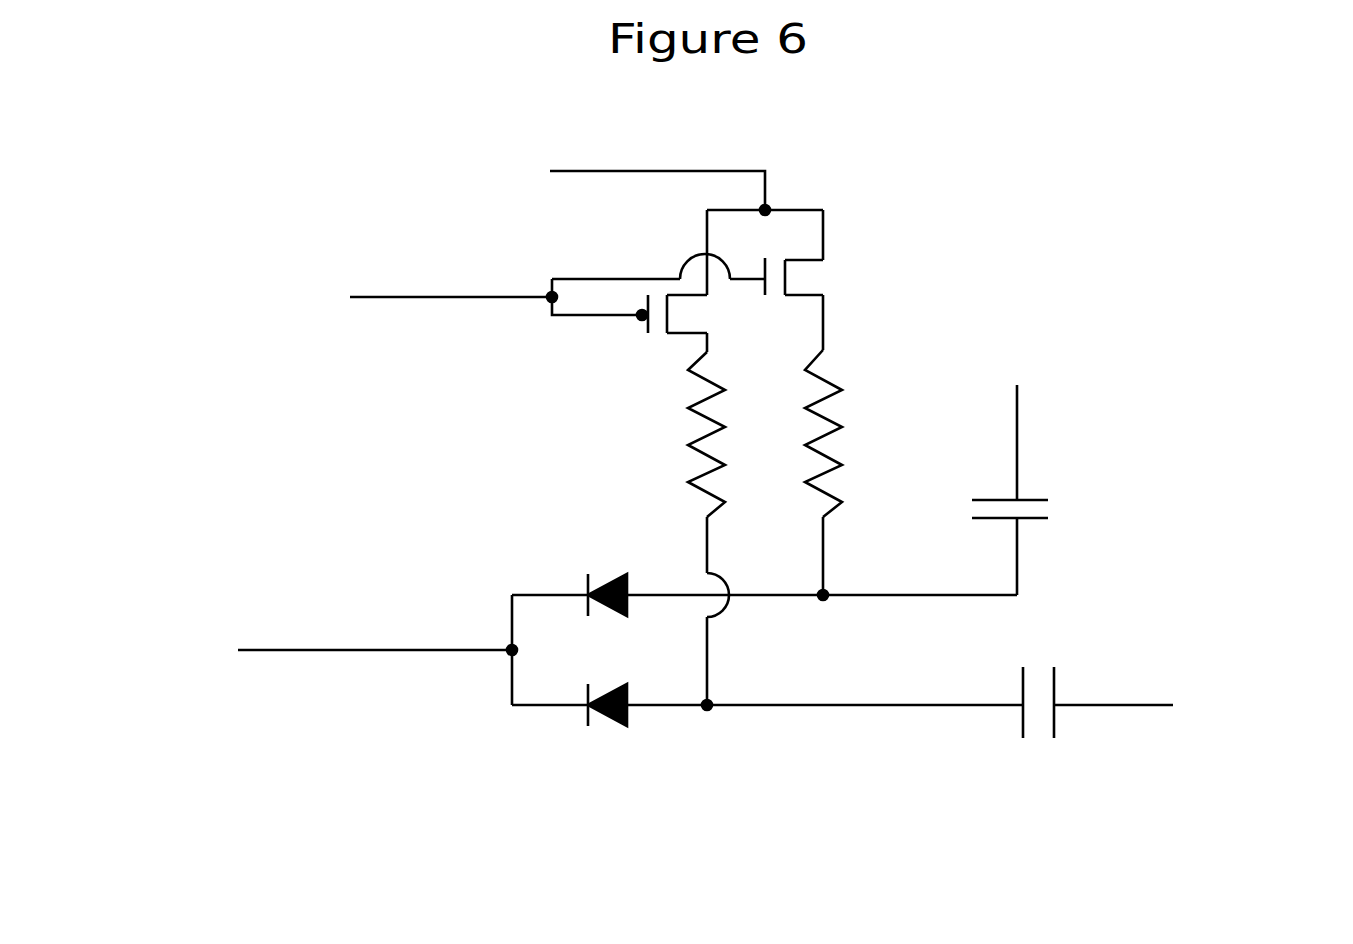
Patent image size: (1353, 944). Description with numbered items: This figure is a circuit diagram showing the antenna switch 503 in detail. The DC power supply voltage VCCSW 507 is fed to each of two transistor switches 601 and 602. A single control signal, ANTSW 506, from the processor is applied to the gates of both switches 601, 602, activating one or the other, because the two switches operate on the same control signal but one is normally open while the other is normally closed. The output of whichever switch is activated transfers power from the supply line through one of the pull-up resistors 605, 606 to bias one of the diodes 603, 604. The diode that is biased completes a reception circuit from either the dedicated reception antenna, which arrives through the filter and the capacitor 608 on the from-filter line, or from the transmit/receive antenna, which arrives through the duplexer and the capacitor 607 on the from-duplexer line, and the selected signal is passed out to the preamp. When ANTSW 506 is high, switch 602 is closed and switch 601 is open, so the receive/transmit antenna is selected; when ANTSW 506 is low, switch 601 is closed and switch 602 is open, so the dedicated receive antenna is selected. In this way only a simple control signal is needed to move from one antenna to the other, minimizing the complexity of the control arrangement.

The antenna switch 503 is at (768, 835).
The ANTSW 506 is at (417, 291).
The VCCSW 507 is at (621, 173).
The switch 601 is at (629, 323).
The switch 602 is at (794, 293).
The diode 603 is at (613, 573).
The diode 604 is at (608, 723).
The pull-up resistor 605 is at (690, 455).
The pull-up resistor 606 is at (838, 445).
The capacitor 607 is at (1045, 512).
The capacitor 608 is at (1043, 742).